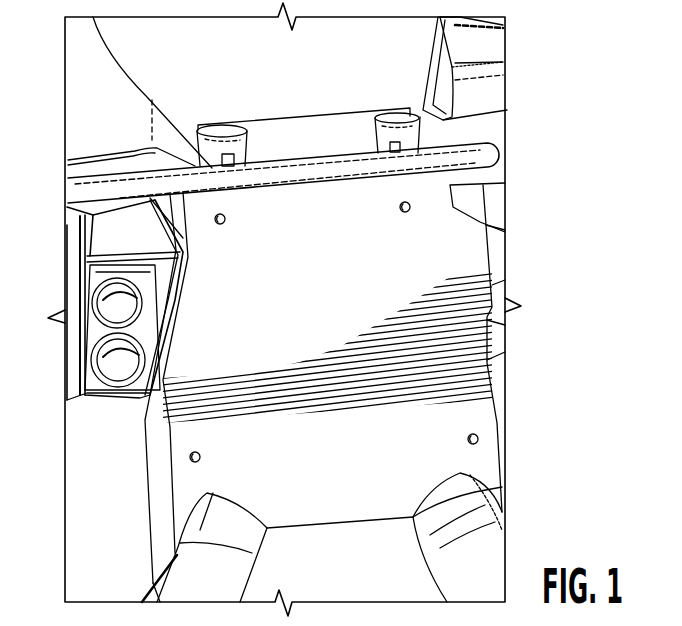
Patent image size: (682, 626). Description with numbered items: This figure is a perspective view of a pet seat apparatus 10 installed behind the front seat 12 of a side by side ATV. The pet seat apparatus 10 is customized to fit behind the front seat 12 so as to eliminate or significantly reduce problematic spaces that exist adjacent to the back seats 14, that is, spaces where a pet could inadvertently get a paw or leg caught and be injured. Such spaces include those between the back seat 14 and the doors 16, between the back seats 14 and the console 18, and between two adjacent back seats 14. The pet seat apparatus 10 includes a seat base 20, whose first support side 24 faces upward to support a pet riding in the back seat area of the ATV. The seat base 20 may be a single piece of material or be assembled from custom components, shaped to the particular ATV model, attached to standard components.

The pet seat apparatus 10 is at (525, 195).
The front seat 12 is at (403, 63).
The back seat 14 is at (400, 543).
The door 16 is at (497, 292).
The console 18 is at (150, 330).
The seat base 20 is at (467, 341).
The first support side 24 is at (298, 284).